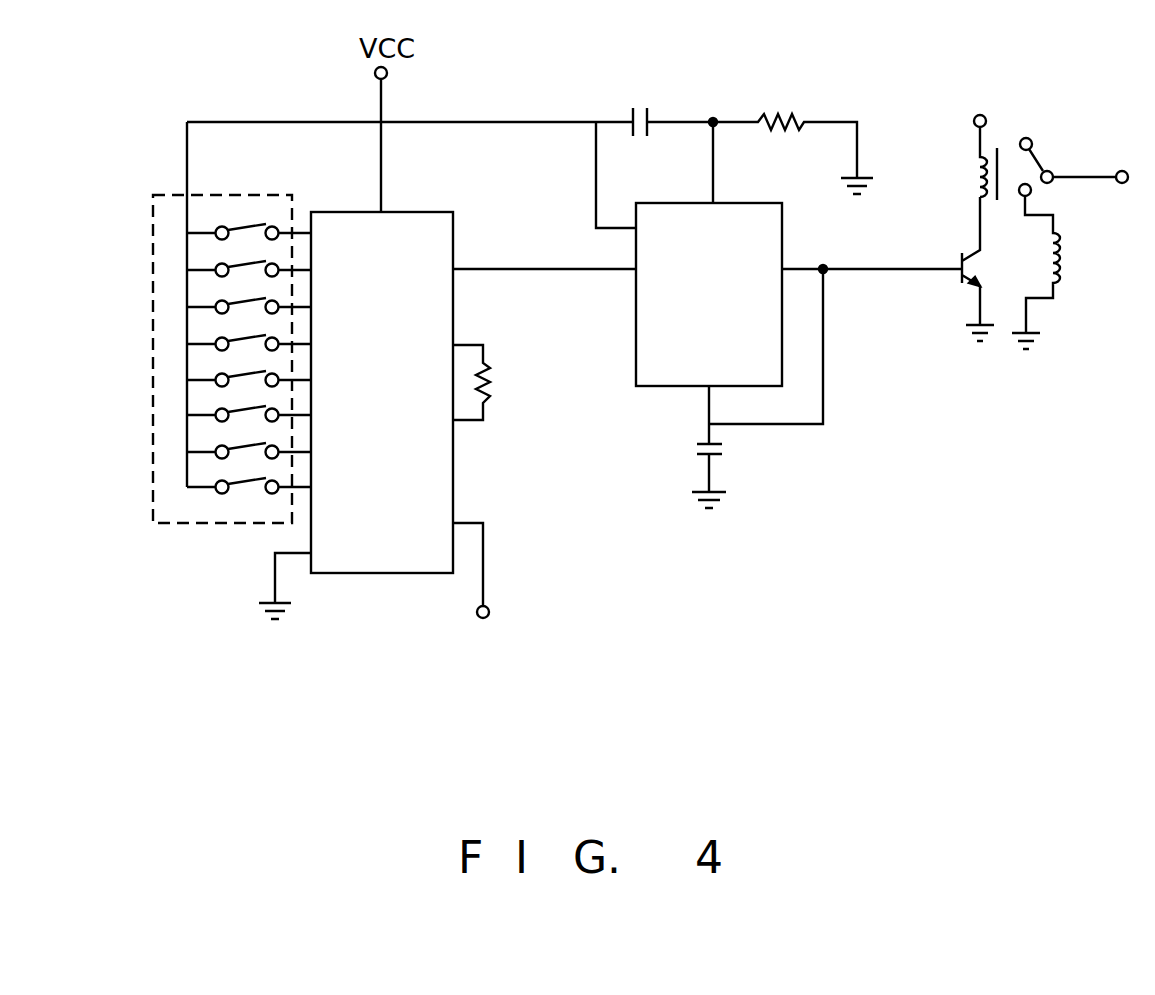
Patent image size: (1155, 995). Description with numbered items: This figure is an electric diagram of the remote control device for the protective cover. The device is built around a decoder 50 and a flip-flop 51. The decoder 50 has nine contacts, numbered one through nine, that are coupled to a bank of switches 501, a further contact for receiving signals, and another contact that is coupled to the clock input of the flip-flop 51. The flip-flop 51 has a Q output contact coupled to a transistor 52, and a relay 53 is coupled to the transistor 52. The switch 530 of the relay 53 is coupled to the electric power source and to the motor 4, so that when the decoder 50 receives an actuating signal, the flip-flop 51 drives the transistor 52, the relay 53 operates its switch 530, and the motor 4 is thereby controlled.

The motor 4 is at (1050, 272).
The decoder 50 is at (377, 543).
The switches 501 is at (192, 502).
The flip-flop 51 is at (663, 367).
The transistor 52 is at (958, 269).
The relay 53 is at (968, 139).
The switch of the relay 530 is at (1083, 163).